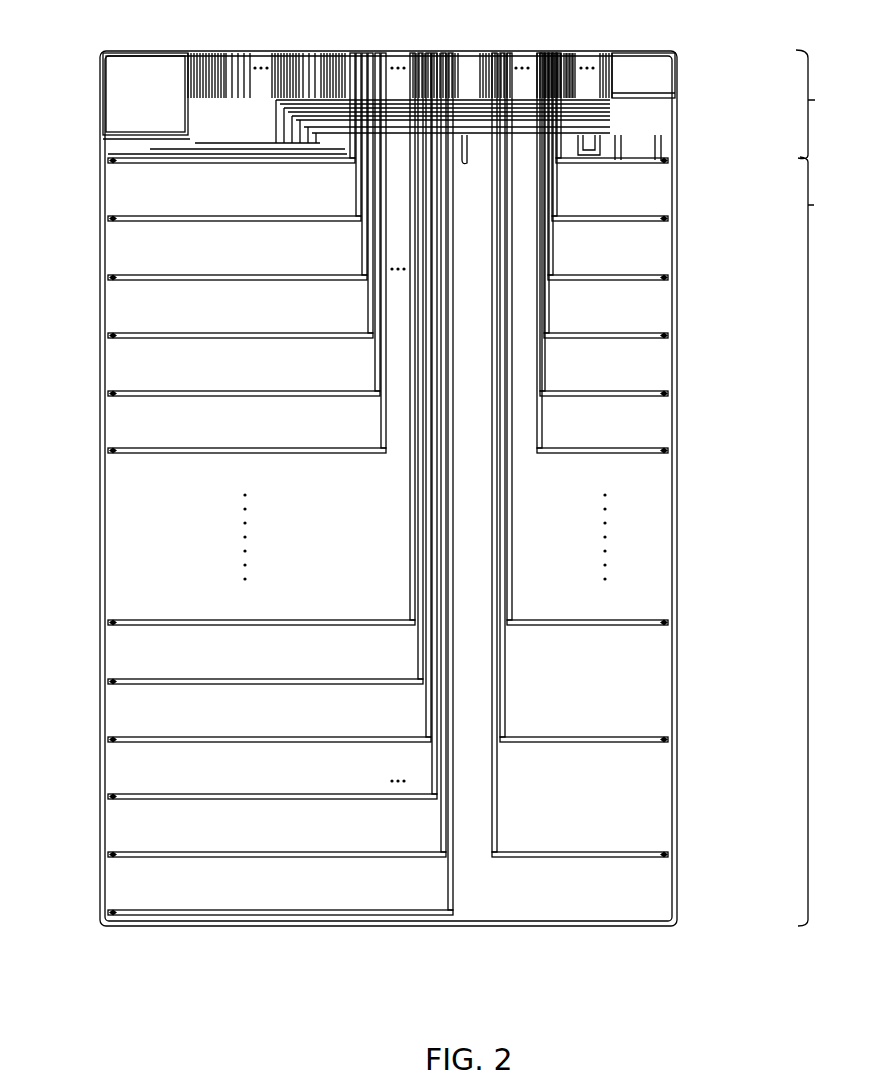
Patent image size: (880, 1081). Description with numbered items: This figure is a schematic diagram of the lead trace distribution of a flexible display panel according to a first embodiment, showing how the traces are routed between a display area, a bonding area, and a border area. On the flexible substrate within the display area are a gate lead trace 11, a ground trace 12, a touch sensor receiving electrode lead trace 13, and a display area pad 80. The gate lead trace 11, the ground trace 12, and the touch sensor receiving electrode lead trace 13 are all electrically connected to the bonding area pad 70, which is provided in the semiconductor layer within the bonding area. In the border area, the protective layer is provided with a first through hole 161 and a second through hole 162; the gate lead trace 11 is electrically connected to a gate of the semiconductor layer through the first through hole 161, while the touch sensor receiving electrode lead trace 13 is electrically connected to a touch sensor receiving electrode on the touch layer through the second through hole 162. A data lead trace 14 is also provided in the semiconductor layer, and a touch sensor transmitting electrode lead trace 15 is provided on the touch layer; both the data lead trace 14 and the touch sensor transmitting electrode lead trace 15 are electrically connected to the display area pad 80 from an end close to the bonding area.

The gate lead trace 11 is at (545, 400).
The ground trace 12 is at (610, 95).
The touch sensor receiving electrode lead trace 13 is at (612, 68).
The data lead trace 14 is at (190, 68).
The touch sensor transmitting electrode lead trace 15 is at (570, 68).
The bonding area pad 70 is at (479, 107).
The display area pad 80 is at (475, 488).
The first through hole 161 is at (668, 624).
The second through hole 162 is at (668, 740).